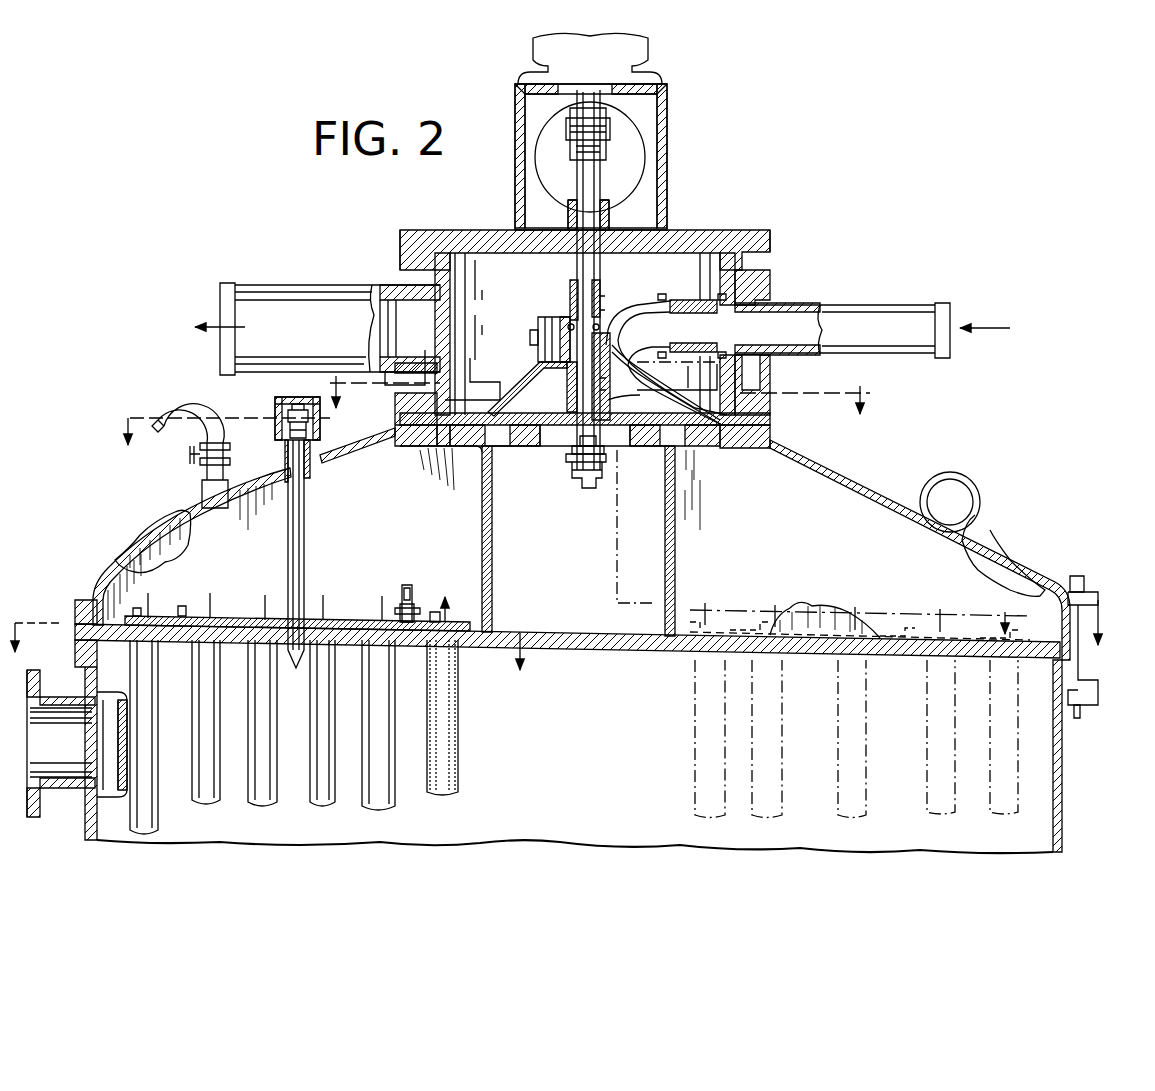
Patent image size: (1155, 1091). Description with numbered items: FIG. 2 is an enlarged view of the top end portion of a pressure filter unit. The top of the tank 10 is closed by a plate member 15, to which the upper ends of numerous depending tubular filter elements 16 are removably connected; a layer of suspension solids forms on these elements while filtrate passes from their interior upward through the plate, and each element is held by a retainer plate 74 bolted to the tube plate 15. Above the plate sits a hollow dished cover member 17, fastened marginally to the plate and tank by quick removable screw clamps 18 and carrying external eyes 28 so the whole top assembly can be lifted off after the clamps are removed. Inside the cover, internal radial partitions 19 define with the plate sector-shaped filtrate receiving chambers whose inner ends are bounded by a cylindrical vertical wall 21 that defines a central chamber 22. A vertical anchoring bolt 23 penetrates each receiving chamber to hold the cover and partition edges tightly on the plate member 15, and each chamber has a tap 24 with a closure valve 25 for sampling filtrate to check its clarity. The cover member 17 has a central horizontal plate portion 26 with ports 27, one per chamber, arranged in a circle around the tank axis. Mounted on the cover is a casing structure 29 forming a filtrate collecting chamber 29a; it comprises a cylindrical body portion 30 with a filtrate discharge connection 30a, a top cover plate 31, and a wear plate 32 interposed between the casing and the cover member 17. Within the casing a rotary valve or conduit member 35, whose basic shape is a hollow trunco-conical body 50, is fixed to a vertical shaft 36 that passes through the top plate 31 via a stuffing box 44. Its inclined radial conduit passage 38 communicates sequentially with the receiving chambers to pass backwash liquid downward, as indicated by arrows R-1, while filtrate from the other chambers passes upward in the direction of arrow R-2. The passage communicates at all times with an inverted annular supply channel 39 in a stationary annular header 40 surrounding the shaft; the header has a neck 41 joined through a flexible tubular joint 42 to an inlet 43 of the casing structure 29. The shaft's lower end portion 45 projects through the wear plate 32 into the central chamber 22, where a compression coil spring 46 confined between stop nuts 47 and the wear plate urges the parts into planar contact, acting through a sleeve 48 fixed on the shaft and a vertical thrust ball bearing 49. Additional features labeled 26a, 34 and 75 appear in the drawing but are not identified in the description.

The vessel shell 10 is at (1062, 780).
The plate member 15 is at (598, 650).
The tubular filter elements 16 is at (452, 748).
The dished cover member 17 is at (850, 470).
The screw clamps 18 is at (1088, 700).
The radial partitions 19 is at (188, 548).
The tubular partition 21 is at (480, 524).
The central chamber 22 is at (596, 541).
The anchoring bolt 23 is at (306, 538).
The tap 24 is at (214, 402).
The closure valve 25 is at (188, 456).
The central horizontal plate portion 26 is at (756, 440).
The flange 26a is at (393, 434).
The ports 27 is at (468, 446).
The external eyes 28 is at (982, 493).
The casing structure 29 is at (776, 236).
The filtrate collecting chamber 29a is at (475, 268).
The cylindrical body portion 30 is at (760, 292).
The filtrate discharge connection 30a is at (287, 285).
The top cover plate 31 is at (690, 238).
The wear plate 32 is at (748, 418).
The chamber 34 is at (532, 318).
The rotary conduit member 35 is at (505, 372).
The vertical shaft 36 is at (586, 190).
The inclined radial conduit passage 38 is at (642, 400).
The annular supply channel 39 is at (548, 330).
The annular header 40 is at (558, 318).
The neck 41 is at (636, 318).
The flexible tubular joint 42 is at (700, 298).
The inlet 43 is at (855, 304).
The stuffing box 44 is at (603, 212).
The lower end portion 45 is at (574, 450).
The compression coil spring 46 is at (580, 446).
The stop nuts 47 is at (572, 482).
The sleeve 48 is at (606, 316).
The thrust ball bearing 49 is at (622, 328).
The trunco-conical body 50 is at (520, 388).
The retainer plate 74 is at (352, 620).
The stub pipe 75 is at (410, 588).
The backwash flow arrows R-1 is at (692, 448).
The filtrate flow arrow R-2 is at (420, 340).